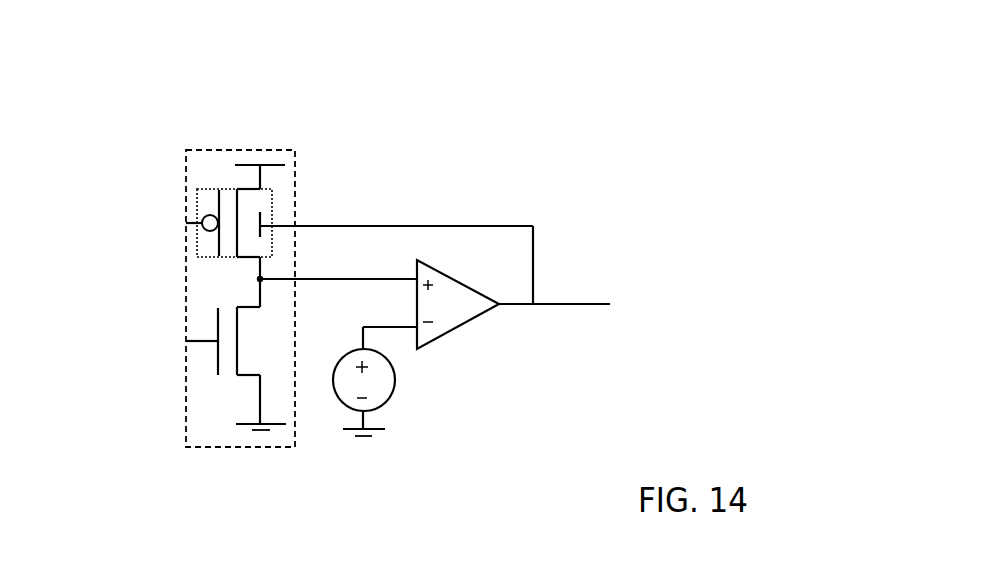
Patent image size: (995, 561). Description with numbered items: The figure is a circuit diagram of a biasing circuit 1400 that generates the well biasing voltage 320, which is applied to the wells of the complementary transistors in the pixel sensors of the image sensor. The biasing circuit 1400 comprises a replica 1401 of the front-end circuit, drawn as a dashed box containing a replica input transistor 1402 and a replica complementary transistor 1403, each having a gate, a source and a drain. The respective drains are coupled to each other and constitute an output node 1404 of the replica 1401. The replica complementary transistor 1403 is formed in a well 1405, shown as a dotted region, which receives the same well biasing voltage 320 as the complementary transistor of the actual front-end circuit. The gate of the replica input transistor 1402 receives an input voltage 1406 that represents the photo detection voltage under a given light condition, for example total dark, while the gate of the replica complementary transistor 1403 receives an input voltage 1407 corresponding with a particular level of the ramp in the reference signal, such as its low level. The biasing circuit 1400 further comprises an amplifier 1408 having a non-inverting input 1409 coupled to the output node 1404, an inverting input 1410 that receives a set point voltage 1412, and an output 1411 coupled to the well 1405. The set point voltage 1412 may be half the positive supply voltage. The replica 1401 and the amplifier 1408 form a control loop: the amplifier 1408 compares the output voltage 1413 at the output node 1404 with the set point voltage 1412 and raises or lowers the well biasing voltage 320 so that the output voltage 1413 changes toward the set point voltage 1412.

The biasing circuit 1400 is at (72, 83).
The replica of the front-end circuit 1401 is at (240, 259).
The replica input transistor 1402 is at (223, 368).
The replica complementary transistor 1403 is at (221, 221).
The output node 1404 is at (287, 271).
The well 1405 is at (192, 211).
The input voltage 1406 is at (176, 332).
The input voltage 1407 is at (168, 219).
The amplifier 1408 is at (458, 331).
The non-inverting input 1409 is at (385, 268).
The inverting input 1410 is at (386, 316).
The output 1411 is at (435, 284).
The set point voltage 1412 is at (353, 379).
The output voltage 1413 is at (338, 269).
The well biasing voltage 320 is at (628, 294).